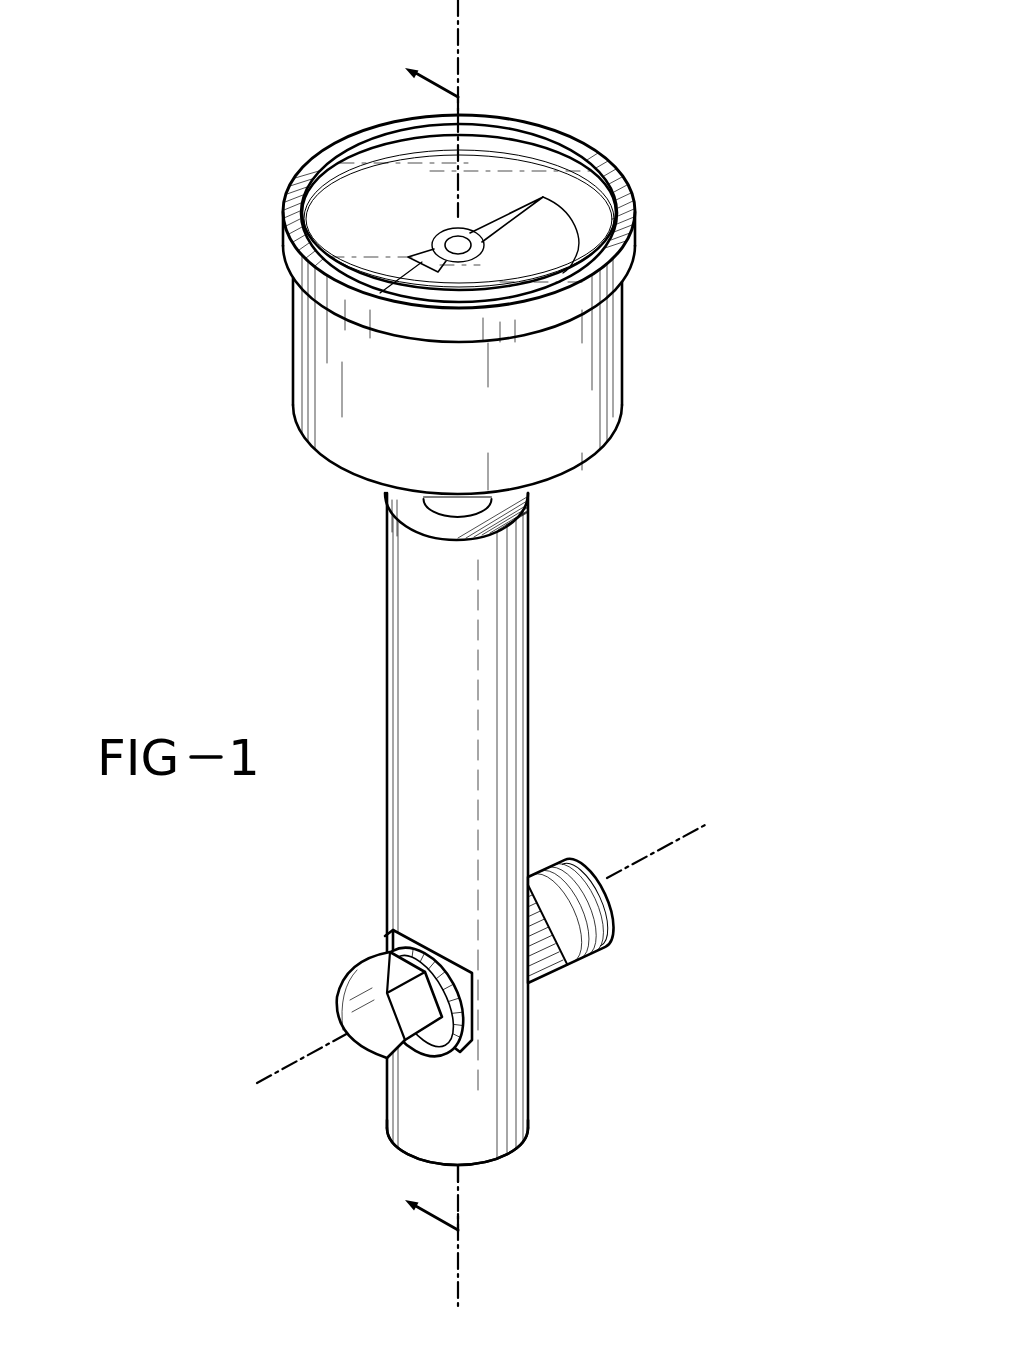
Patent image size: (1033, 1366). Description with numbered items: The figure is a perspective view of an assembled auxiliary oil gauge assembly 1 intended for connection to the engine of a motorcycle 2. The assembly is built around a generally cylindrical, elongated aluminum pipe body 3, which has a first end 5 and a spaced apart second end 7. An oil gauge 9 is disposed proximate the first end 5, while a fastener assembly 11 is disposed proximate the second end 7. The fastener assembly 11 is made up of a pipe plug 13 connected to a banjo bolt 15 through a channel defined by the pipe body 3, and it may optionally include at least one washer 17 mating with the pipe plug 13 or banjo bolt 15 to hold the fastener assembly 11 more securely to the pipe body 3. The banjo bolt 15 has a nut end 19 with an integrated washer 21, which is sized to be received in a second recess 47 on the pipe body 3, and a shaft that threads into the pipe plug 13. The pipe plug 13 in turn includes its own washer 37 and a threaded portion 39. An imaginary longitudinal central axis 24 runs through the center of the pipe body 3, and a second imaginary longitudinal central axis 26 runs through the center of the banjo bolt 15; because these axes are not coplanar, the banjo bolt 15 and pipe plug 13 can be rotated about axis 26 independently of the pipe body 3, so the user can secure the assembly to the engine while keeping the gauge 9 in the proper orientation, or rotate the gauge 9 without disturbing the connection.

The auxiliary oil gauge assembly 1 is at (510, 655).
The motorcycle 2 is at (421, 641).
The pipe body 3 is at (545, 683).
The first end 5 is at (366, 505).
The second end 7 is at (366, 1134).
The oil gauge 9 is at (640, 324).
The fastener assembly 11 is at (473, 941).
The pipe plug 13 is at (587, 898).
The banjo bolt 15 is at (345, 1005).
The washer 17 is at (473, 1007).
The nut end 19 is at (357, 1008).
The washer 21 is at (385, 938).
The longitudinal central axis 24 is at (458, 17).
The longitudinal central axis 26 is at (273, 1077).
The washer 37 is at (531, 966).
The threaded portion 39 is at (595, 903).
The second recess 47 is at (466, 1042).